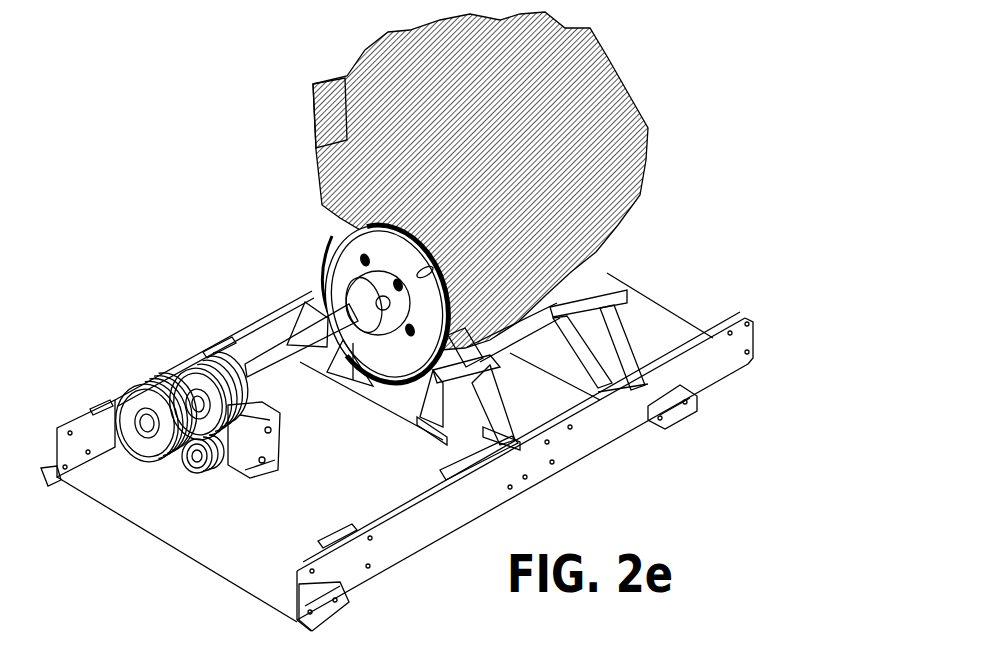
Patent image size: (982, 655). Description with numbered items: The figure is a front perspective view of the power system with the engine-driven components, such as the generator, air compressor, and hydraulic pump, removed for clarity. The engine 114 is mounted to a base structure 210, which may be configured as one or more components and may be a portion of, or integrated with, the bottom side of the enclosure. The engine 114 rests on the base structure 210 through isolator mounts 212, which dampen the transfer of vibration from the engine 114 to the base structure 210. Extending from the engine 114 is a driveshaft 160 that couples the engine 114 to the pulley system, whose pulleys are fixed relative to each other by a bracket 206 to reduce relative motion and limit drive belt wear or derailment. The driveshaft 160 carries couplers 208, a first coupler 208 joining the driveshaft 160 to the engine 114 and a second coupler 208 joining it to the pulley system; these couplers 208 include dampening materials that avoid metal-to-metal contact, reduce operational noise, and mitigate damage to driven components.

The engine 114 is at (582, 66).
The driveshaft 160 is at (287, 368).
The bracket 206 is at (270, 450).
The coupler 208 is at (326, 264).
The base structure 210 is at (87, 500).
The isolator mount 212 is at (468, 346).